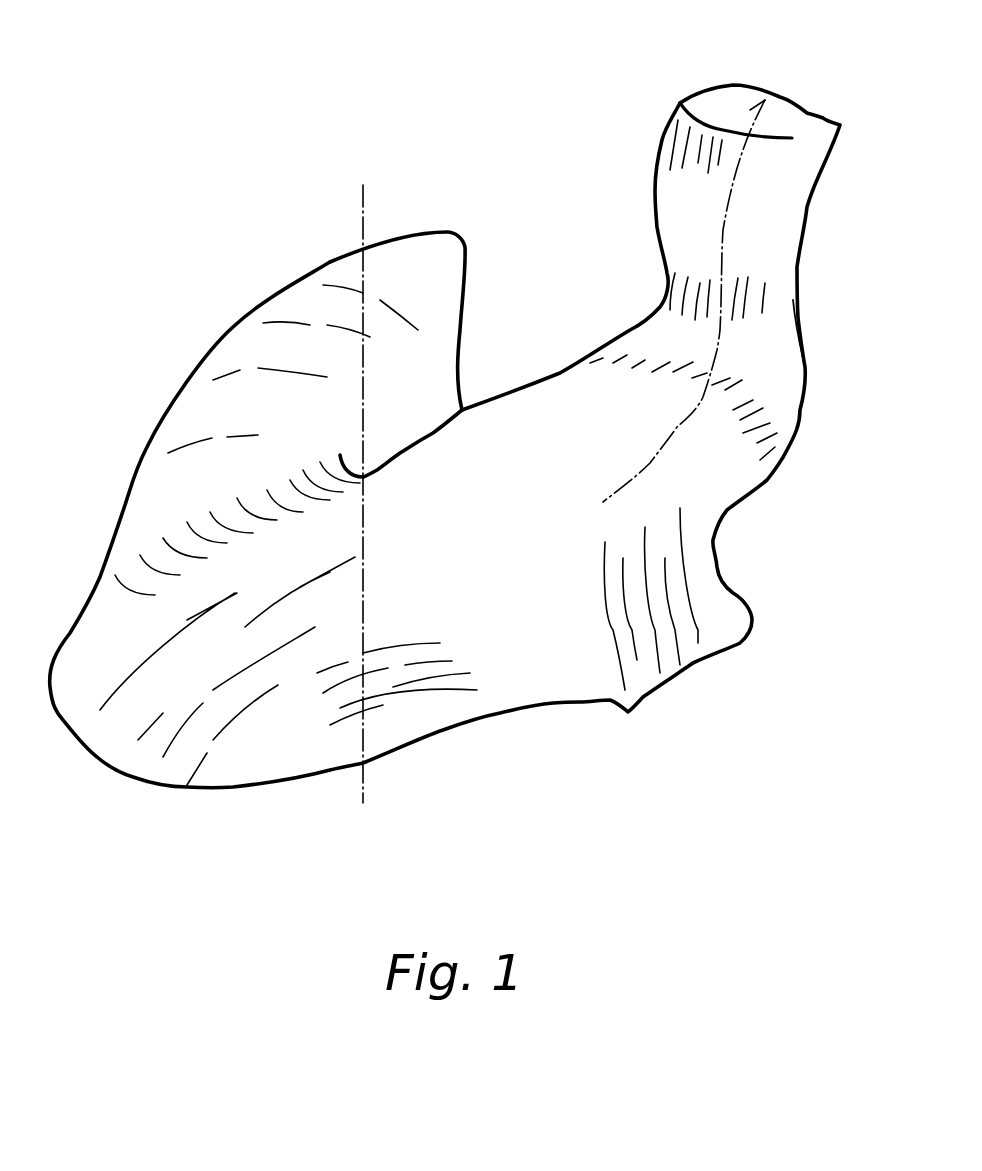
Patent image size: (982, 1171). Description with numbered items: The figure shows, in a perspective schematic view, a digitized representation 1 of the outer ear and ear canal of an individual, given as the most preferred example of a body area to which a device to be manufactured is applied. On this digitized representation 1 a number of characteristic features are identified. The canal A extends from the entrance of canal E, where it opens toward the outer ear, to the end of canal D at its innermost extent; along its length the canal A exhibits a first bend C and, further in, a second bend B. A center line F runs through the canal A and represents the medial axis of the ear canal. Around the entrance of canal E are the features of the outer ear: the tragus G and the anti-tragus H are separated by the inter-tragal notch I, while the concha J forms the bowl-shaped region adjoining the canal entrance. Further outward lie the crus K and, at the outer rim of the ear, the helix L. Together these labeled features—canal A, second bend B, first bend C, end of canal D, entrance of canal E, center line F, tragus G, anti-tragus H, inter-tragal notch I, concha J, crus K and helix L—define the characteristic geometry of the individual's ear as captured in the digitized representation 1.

The digitized representation 1 is at (822, 353).
The canal A is at (773, 195).
The second bend B is at (673, 143).
The first bend C is at (680, 293).
The end of canal D is at (780, 113).
The entrance of canal E is at (753, 398).
The center line F is at (720, 240).
The tragus G is at (692, 565).
The anti-tragus H is at (407, 688).
The inter-tragal notch I is at (598, 637).
The concha J is at (160, 675).
The crus K is at (190, 548).
The helix L is at (307, 348).